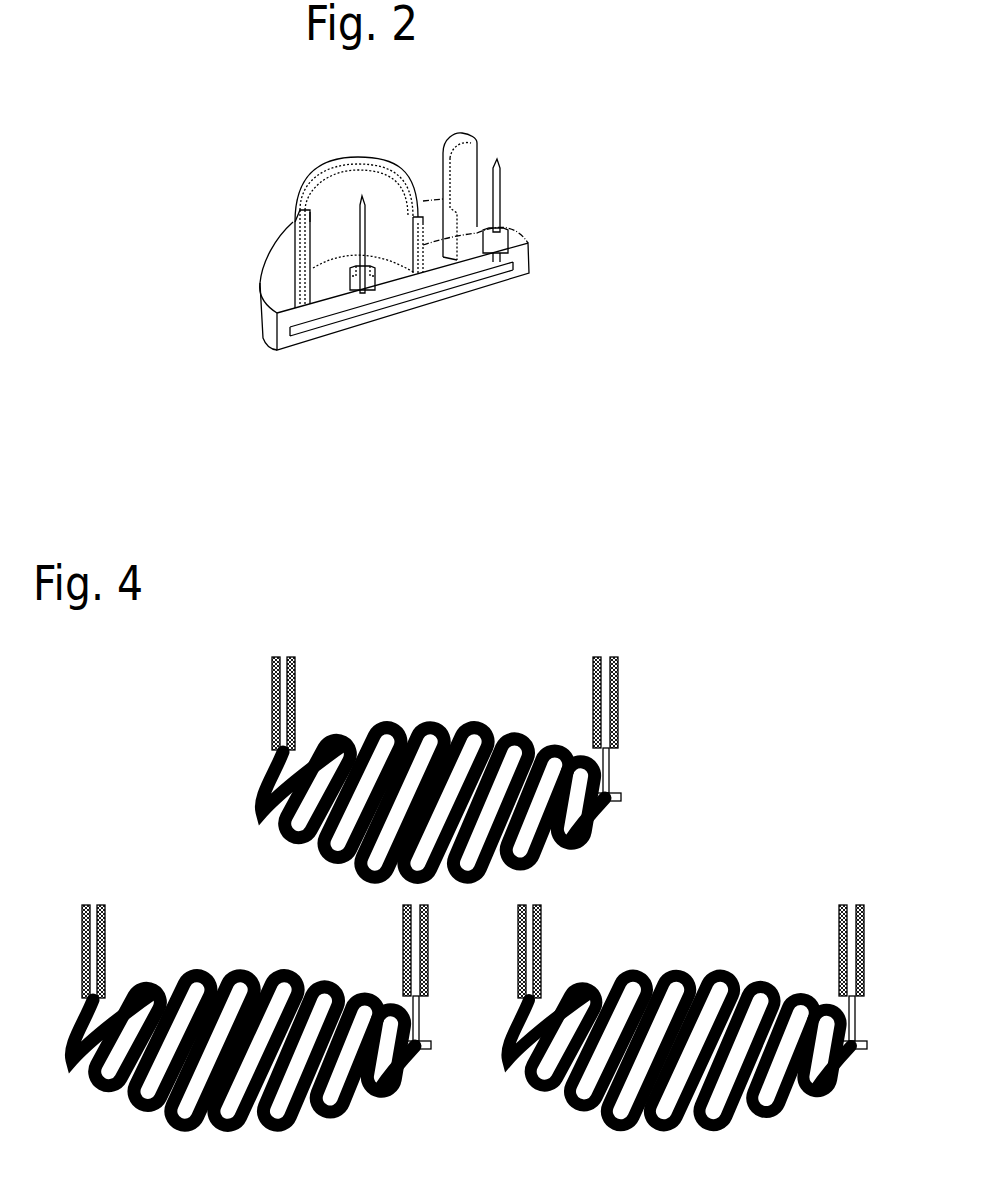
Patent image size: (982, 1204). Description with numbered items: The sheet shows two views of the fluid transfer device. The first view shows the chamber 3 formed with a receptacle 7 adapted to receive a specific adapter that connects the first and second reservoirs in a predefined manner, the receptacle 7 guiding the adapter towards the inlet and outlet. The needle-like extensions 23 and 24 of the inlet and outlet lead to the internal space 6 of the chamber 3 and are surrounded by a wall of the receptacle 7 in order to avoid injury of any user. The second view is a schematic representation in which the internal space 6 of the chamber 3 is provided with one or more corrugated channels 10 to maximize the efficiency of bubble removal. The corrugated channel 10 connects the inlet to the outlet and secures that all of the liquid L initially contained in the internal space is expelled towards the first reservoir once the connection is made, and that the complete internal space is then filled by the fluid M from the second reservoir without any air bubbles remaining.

In FIG. 2, the chamber 3 is at (524, 255).
In FIG. 2, the internal space 6 is at (424, 294).
In FIG. 2, the receptacle 7 is at (292, 243).
In FIG. 2, the needle-like extension 23 is at (504, 160).
In FIG. 2, the needle-like extension 24 is at (357, 214).
In FIG. 4, the corrugated channel 10 is at (268, 762).
In FIG. 4, the liquid L is at (618, 720).
In FIG. 4, the fluid M is at (98, 950).